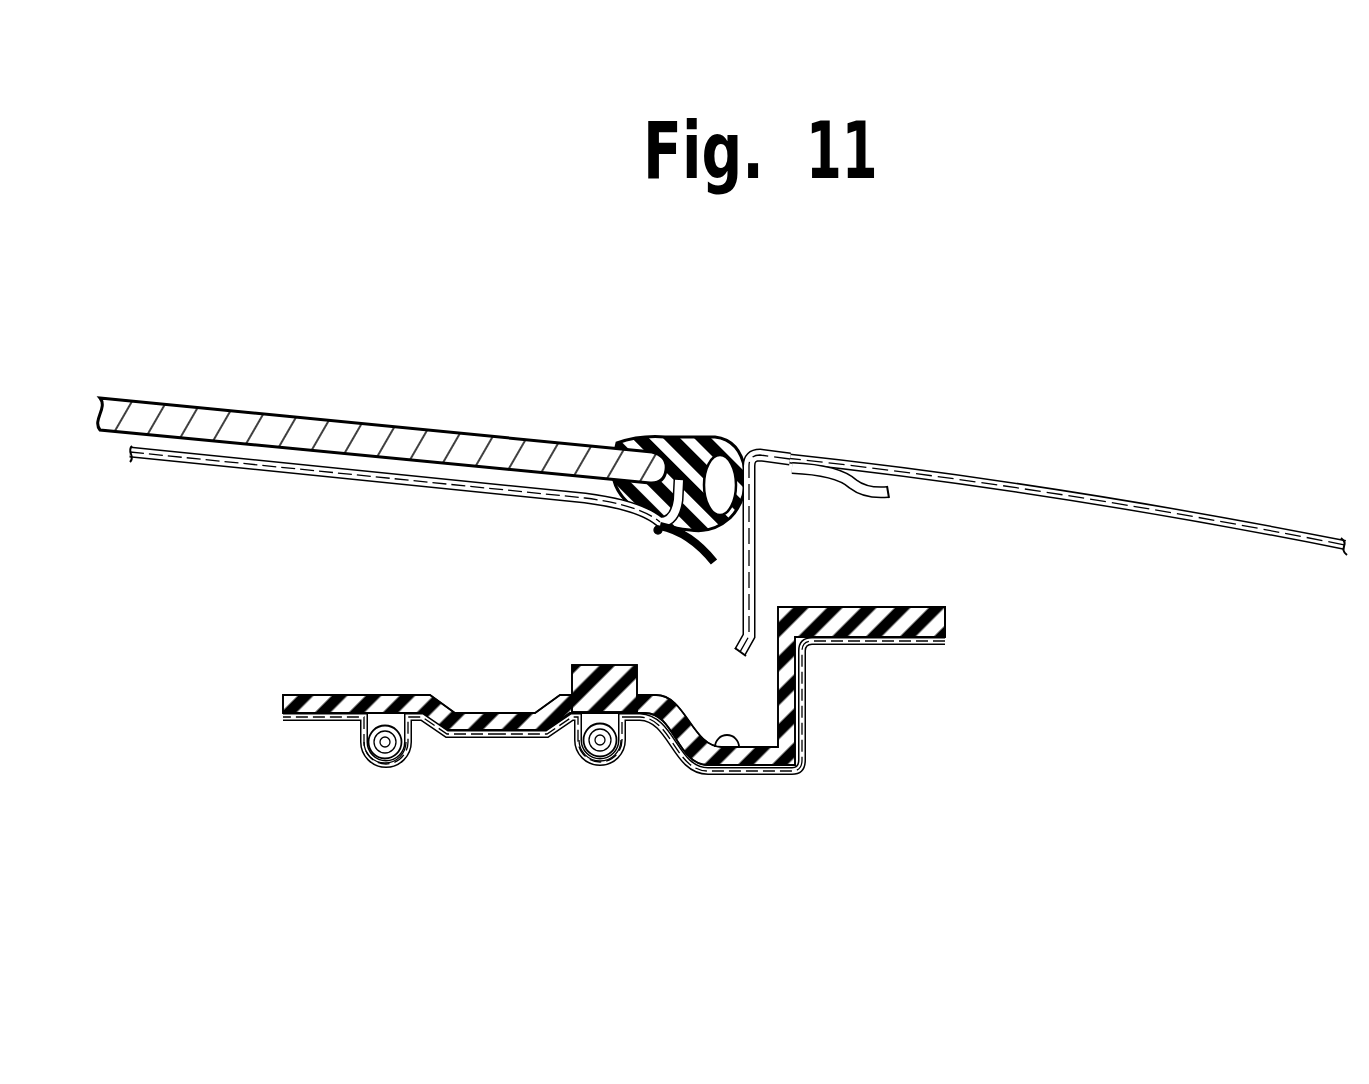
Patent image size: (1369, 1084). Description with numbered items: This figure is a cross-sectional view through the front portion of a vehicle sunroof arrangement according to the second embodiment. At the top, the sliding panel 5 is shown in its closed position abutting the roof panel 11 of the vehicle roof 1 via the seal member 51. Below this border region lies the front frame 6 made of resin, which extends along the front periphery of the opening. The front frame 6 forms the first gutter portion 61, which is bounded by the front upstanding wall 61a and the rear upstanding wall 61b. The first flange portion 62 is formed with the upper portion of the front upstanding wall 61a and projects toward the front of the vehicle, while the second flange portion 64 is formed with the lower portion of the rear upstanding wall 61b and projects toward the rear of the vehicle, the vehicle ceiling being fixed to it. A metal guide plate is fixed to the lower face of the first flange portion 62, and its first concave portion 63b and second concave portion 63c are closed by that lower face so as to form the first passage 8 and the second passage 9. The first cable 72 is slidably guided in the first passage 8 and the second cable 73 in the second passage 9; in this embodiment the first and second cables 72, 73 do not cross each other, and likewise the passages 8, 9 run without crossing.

The vehicle roof 1 is at (1162, 492).
The sliding panel 5 is at (285, 420).
The front frame 6 is at (298, 688).
The first passage 8 is at (380, 770).
The second passage 9 is at (571, 761).
The roof panel 11 is at (1022, 480).
The seal member 51 is at (663, 437).
The first gutter portion 61 is at (738, 776).
The front upstanding wall 61a is at (790, 680).
The rear upstanding wall 61b is at (600, 690).
The first flange portion 62 is at (868, 626).
The first concave portion 63b is at (368, 732).
The second concave portion 63c is at (620, 766).
The second flange portion 64 is at (383, 700).
The first cable 72 is at (395, 762).
The second cable 73 is at (593, 752).